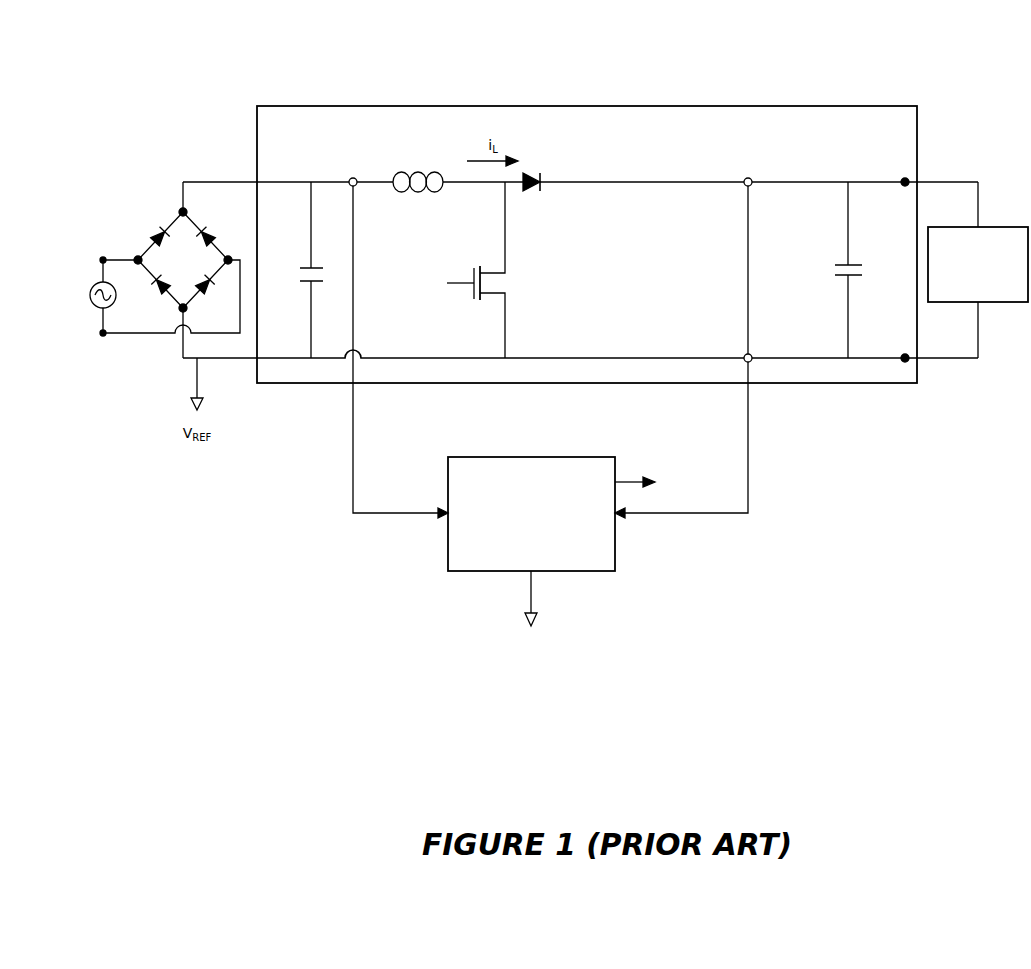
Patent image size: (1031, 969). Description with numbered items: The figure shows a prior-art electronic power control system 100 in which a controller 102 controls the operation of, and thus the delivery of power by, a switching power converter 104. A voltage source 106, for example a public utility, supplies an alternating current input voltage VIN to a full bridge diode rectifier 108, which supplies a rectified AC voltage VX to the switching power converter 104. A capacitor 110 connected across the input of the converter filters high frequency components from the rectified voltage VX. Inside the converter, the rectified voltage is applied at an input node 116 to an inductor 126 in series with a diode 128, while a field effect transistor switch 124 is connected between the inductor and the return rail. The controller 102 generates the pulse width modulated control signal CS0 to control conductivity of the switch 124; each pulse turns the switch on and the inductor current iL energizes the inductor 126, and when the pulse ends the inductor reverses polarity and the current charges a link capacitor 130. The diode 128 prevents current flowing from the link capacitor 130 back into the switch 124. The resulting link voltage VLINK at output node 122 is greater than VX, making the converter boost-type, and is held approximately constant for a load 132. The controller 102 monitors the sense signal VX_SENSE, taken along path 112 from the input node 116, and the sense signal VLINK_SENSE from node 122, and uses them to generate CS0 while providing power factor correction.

The electronic power control system 100 is at (976, 130).
The controller 102 is at (553, 457).
The switching power converter 104 is at (345, 106).
The voltage source 106 is at (100, 310).
The full bridge diode rectifier 108 is at (183, 260).
The capacitor 110 is at (300, 266).
The sense node / path 112 is at (356, 428).
The node 116 is at (350, 179).
The node 122 is at (746, 179).
The field effect transistor (FET) switch 124 is at (473, 276).
The inductor 126 is at (406, 171).
The diode 128 is at (530, 172).
The link capacitor 130 is at (845, 264).
The load 132 is at (964, 270).